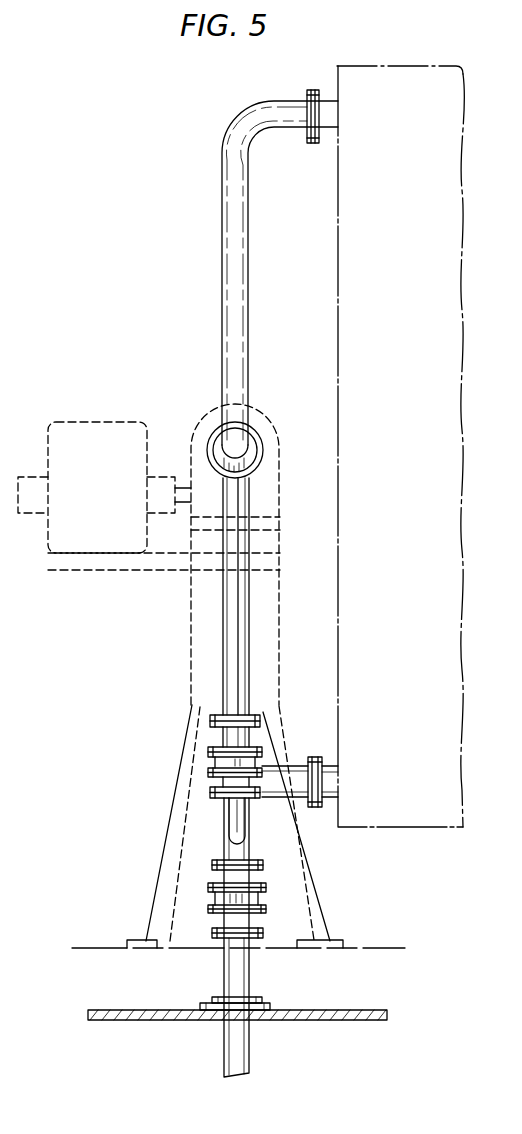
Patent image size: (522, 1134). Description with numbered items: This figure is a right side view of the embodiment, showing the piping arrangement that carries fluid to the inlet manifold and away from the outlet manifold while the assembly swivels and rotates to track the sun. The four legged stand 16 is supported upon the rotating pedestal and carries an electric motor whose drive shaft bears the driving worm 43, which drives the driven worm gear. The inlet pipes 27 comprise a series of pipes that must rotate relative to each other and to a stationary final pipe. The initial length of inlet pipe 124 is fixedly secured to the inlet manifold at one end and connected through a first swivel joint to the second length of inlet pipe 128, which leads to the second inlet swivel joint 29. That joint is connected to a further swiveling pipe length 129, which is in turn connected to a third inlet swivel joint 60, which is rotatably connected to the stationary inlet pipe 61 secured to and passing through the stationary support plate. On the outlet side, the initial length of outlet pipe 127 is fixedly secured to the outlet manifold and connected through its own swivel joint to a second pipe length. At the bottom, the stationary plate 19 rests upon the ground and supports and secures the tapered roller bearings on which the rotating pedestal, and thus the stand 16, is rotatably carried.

The initial length of outlet pipe 127 is at (236, 125).
The inlet pipes 27 is at (206, 419).
The driving worm 43 is at (279, 531).
The second length of inlet pipe 128 is at (240, 627).
The second inlet swivel joint 29 is at (212, 761).
The initial length of inlet pipe 124 is at (299, 762).
The further swiveling pipe length 129 is at (229, 822).
The four legged stand 16 is at (320, 889).
The third inlet swivel joint 60 is at (215, 900).
The stationary inlet pipe 61 is at (240, 975).
The stationary plate 19 is at (386, 1020).